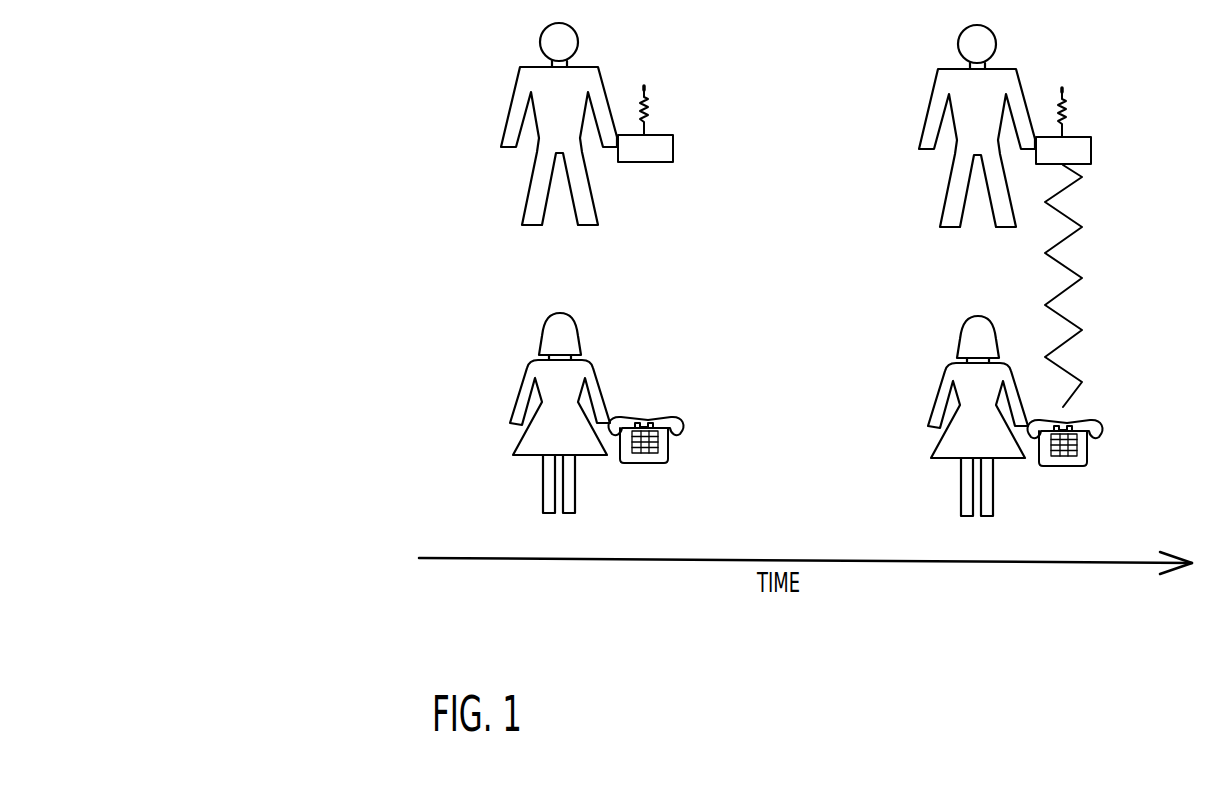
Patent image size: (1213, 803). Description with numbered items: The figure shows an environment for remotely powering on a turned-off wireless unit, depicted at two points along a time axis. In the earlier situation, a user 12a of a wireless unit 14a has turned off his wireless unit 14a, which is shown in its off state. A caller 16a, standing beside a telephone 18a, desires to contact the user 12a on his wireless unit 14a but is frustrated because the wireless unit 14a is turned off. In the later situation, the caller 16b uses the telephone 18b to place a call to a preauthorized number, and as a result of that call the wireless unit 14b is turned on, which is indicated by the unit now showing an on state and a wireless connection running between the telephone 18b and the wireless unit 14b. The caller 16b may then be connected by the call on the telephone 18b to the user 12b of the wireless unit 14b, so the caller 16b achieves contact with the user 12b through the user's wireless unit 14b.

The user 12a is at (574, 33).
The wireless unit 14a is at (674, 135).
The caller 16a is at (571, 318).
The telephone 18a is at (678, 418).
The user 12b is at (993, 34).
The wireless unit 14b is at (1092, 138).
The caller 16b is at (978, 317).
The telephone 18b is at (1098, 422).